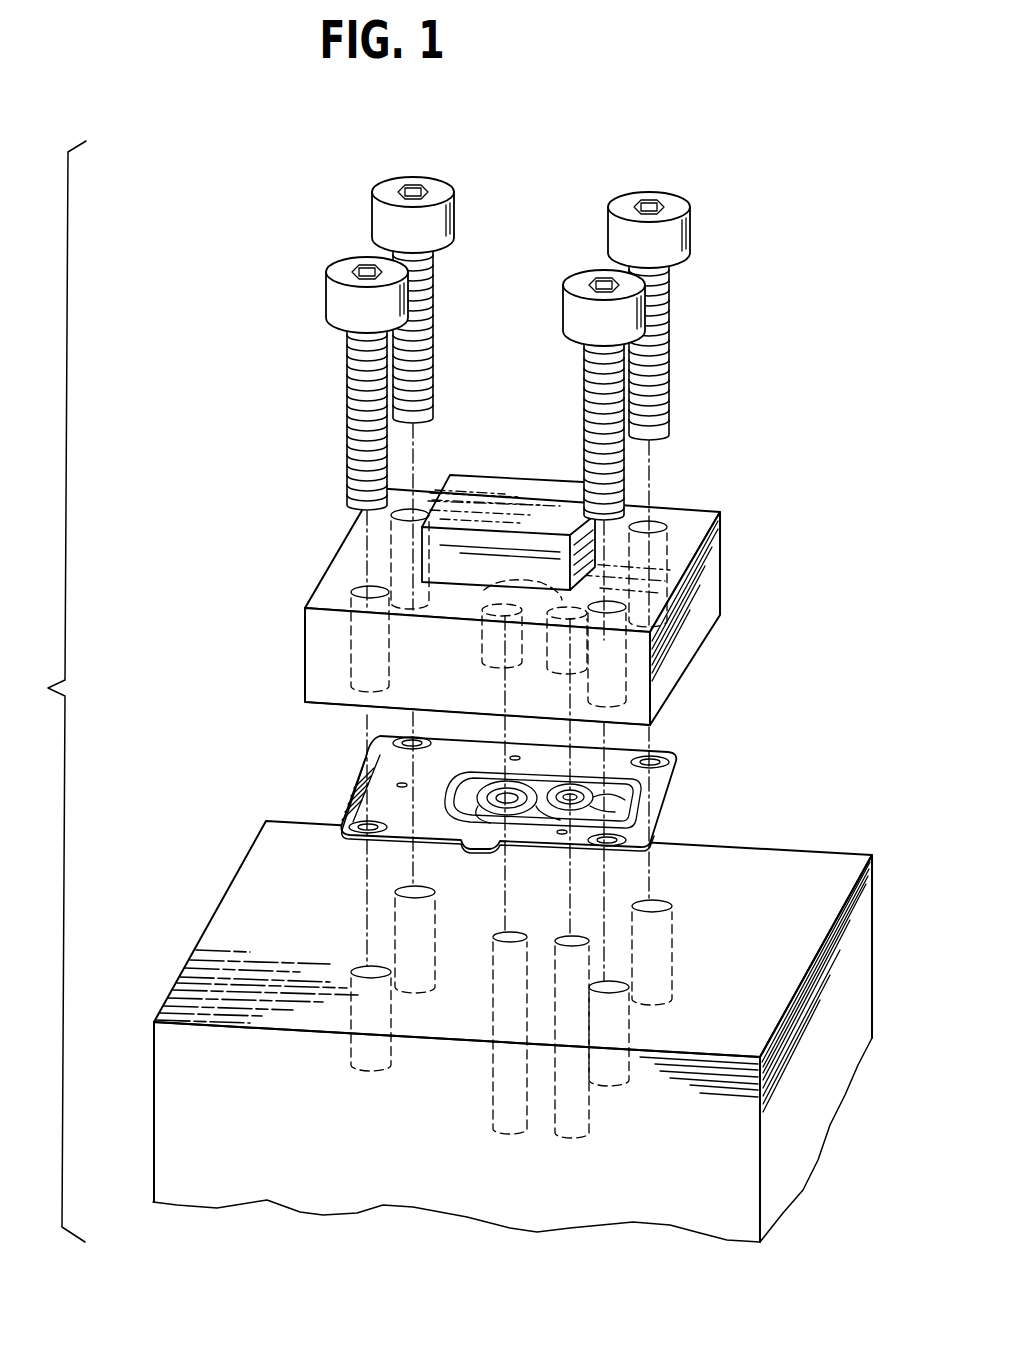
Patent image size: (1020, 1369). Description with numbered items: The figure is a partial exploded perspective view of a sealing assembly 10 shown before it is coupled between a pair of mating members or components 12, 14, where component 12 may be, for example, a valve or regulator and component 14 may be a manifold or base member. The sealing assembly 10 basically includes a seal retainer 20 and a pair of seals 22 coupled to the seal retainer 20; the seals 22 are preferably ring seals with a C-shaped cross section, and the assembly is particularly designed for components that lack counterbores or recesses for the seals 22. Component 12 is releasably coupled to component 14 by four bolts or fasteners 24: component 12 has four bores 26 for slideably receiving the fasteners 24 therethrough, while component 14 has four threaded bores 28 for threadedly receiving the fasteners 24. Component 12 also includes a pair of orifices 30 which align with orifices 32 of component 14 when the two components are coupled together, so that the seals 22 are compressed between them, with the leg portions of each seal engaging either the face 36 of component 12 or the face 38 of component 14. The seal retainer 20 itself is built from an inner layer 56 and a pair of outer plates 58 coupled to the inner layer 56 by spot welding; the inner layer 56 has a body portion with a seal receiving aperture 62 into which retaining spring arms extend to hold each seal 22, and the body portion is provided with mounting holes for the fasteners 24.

The sealing assembly 10 is at (350, 767).
The component 12 is at (706, 564).
The component 14 is at (813, 1072).
The seal retainer 20 is at (684, 793).
The seals 22 is at (568, 790).
The fasteners 24 is at (410, 270).
The bores 26 is at (418, 510).
The threaded bores 28 is at (421, 893).
The orifices 30 is at (545, 586).
The orifices 32 is at (519, 934).
The face 36 is at (317, 705).
The face 38 is at (250, 912).
The inner layer 56 is at (448, 797).
The outer plates 58 is at (370, 788).
The seal receiving aperture 62 is at (477, 782).